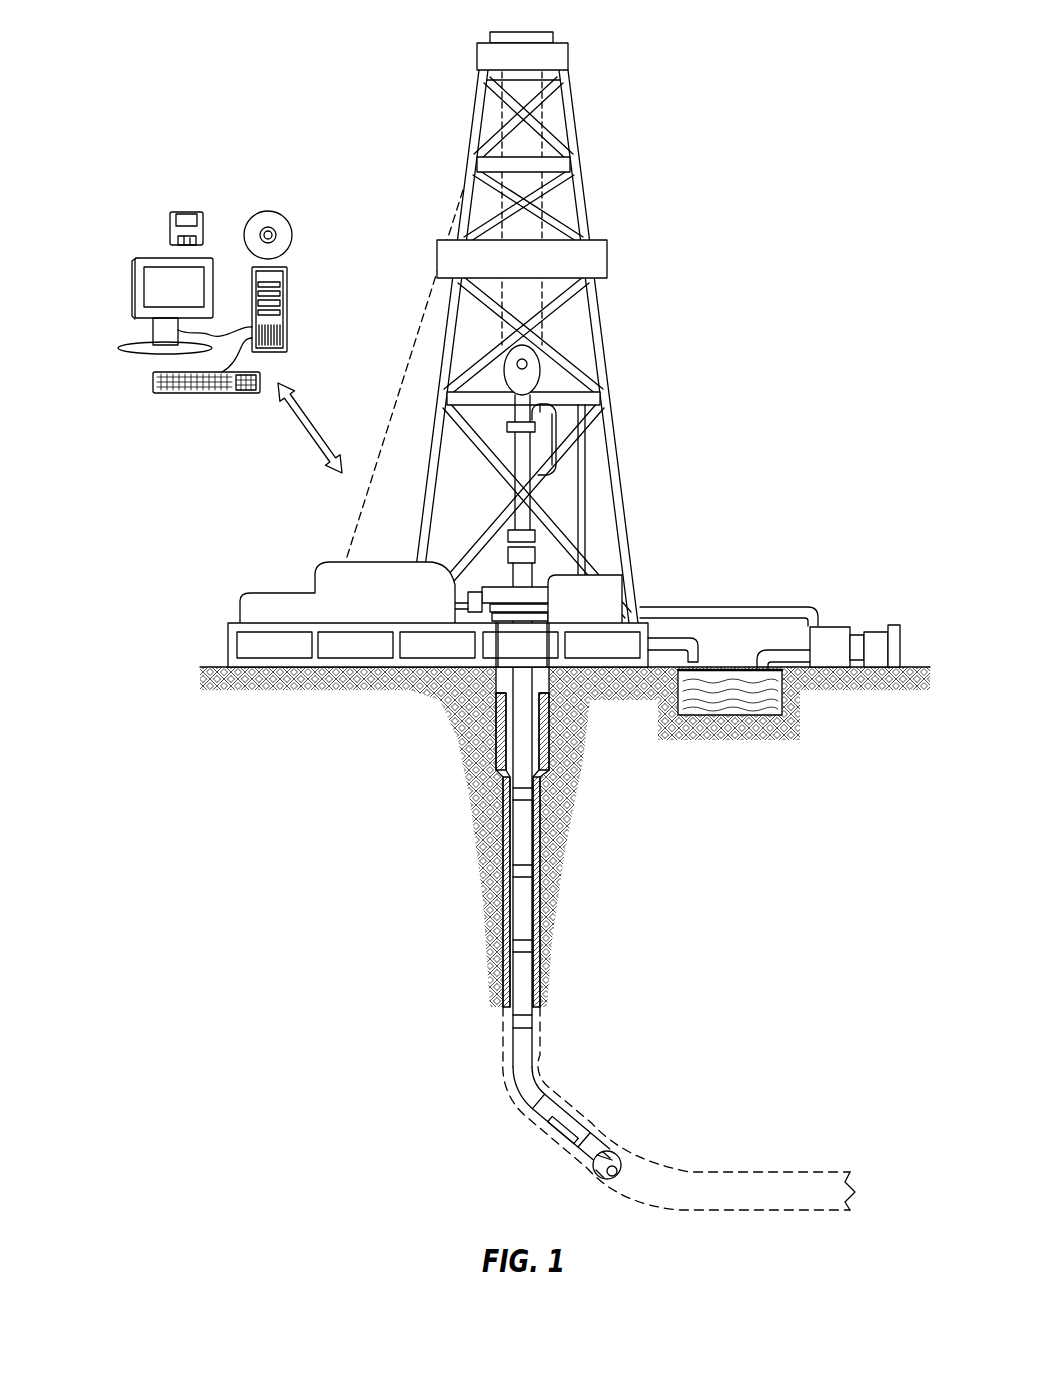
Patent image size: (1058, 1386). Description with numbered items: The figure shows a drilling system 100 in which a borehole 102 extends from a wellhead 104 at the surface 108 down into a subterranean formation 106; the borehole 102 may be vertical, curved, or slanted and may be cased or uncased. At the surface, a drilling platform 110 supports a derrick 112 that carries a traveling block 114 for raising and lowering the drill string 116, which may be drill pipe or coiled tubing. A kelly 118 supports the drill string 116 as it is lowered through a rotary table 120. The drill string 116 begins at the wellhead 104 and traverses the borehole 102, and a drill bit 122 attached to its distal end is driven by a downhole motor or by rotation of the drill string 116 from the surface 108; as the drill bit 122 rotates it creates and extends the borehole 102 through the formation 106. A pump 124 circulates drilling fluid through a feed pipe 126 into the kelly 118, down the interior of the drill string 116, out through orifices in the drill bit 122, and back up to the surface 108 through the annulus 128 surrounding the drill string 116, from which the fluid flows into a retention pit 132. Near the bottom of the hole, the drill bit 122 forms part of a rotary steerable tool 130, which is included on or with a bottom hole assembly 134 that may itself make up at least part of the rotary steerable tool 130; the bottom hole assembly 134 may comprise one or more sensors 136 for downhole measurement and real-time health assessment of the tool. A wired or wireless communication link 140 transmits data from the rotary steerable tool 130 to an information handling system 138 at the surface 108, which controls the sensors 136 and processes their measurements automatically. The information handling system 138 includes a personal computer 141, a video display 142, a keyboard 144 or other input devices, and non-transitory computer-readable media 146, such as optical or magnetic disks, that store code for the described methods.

The drilling system 100 is at (836, 134).
The borehole 102 is at (540, 868).
The wellhead 104 is at (572, 612).
The subterranean formation 106 is at (765, 958).
The surface 108 is at (912, 667).
The drilling platform 110 is at (228, 648).
The derrick 112 is at (582, 184).
The traveling block 114 is at (545, 368).
The drill string 116 is at (530, 850).
The kelly 118 is at (522, 452).
The rotary table 120 is at (558, 570).
The drill bit 122 is at (620, 1158).
The pump 124 is at (836, 626).
The feed pipe 126 is at (758, 607).
The annulus 128 is at (505, 870).
The rotary steerable tool 130 is at (528, 1128).
The retention pit 132 is at (725, 705).
The bottom hole assembly 134 is at (566, 1097).
The sensors 136 is at (567, 1130).
The information handling system 138 is at (203, 305).
The communication link 140 is at (298, 434).
The personal computer 141 is at (290, 283).
The video display 142 is at (135, 296).
The keyboard 144 is at (165, 393).
The non-transitory computer-readable media 146 is at (258, 212).